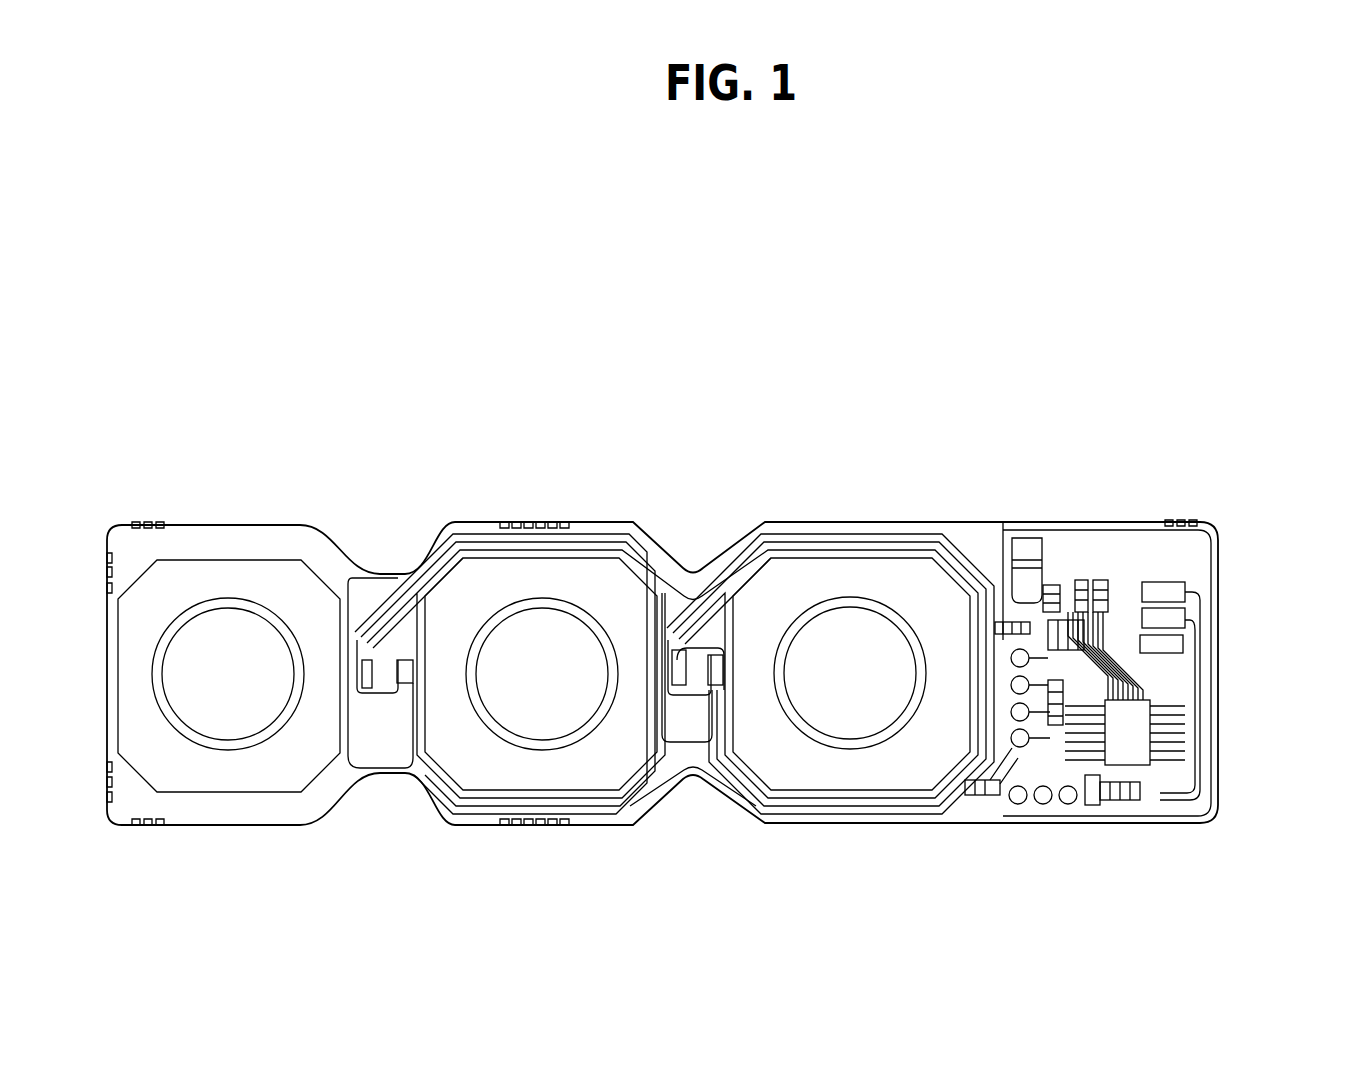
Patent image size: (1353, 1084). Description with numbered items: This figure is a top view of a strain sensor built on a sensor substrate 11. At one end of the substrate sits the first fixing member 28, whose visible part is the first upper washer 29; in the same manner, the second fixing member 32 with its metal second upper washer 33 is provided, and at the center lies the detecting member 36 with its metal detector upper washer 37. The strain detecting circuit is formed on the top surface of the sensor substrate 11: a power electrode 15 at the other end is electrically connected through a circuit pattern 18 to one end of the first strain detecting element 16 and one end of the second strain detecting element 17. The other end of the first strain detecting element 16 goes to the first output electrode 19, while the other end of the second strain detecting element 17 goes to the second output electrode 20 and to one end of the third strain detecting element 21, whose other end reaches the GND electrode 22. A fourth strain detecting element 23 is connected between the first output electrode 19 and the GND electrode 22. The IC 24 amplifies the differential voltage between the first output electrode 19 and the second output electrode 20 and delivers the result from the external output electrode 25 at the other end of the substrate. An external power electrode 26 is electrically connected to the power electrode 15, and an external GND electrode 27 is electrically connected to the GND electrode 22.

The sensor substrate 11 is at (220, 540).
The power electrode 15 is at (1020, 722).
The first strain detecting element 16 is at (717, 652).
The second strain detecting element 17 is at (403, 662).
The circuit pattern 18 is at (600, 800).
The first output electrode 19 is at (1012, 745).
The second output electrode 20 is at (1024, 655).
The third strain detecting element 21 is at (365, 662).
The GND electrode 22 is at (1003, 622).
The fourth strain detecting element 23 is at (676, 642).
The IC 24 is at (1138, 752).
The external output electrode 25 is at (1180, 618).
The external power electrode 26 is at (1180, 645).
The external GND electrode 27 is at (1185, 592).
The first fixing member 28 is at (162, 778).
The first upper washer 29 is at (217, 776).
The second fixing member 32 is at (763, 760).
The second upper washer 33 is at (808, 775).
The detecting member 36 is at (460, 765).
The detector upper washer 37 is at (517, 775).